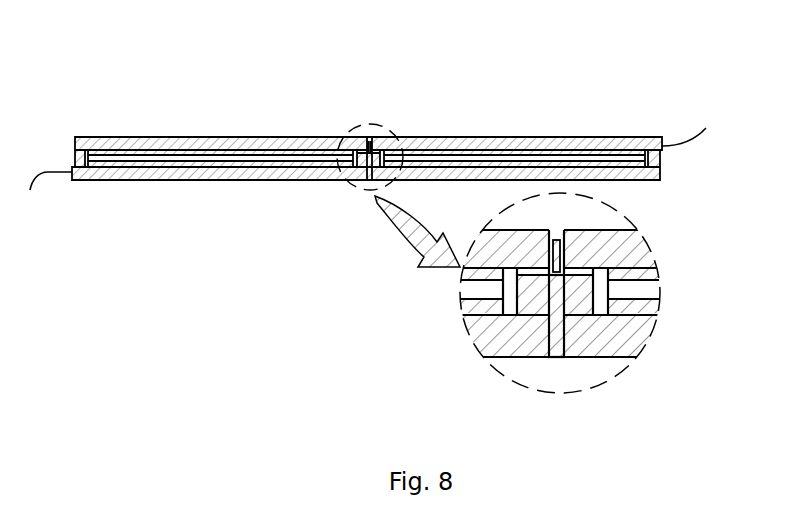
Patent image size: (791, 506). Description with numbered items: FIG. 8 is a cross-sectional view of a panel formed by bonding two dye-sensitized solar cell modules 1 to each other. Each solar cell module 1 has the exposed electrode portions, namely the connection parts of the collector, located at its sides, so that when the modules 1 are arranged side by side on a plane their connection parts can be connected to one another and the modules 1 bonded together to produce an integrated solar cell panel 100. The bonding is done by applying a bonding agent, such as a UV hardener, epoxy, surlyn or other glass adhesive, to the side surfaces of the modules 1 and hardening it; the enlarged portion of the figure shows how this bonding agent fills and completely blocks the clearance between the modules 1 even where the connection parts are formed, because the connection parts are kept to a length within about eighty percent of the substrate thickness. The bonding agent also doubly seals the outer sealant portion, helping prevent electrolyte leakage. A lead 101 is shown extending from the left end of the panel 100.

The integrated solar cell panel 100 is at (601, 84).
The solar cell module 1 is at (236, 125).
The lead wire 101 is at (50, 176).